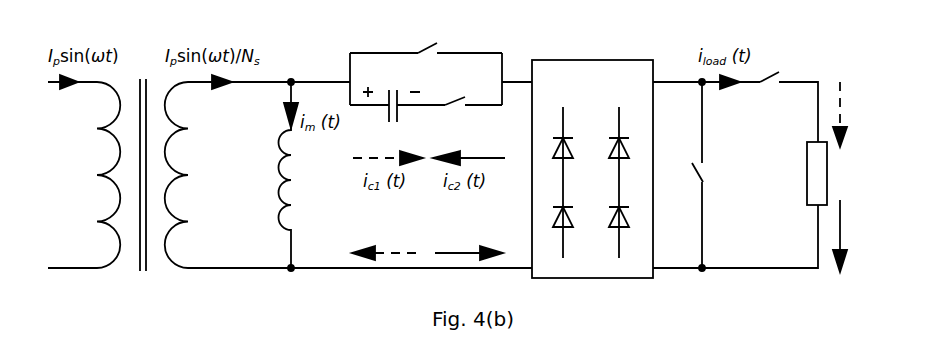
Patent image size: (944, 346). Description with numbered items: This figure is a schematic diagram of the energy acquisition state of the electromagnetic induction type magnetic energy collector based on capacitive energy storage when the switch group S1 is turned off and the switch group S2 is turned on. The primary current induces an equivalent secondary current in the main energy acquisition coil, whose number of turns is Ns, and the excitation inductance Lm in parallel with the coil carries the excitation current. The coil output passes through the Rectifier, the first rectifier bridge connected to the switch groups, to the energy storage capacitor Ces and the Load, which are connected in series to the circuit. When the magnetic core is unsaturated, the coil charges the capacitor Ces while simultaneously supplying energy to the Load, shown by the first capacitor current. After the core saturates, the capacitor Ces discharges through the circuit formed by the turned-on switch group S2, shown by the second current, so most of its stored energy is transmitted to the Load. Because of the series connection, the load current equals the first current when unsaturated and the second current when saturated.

The number of coil turns Ns is at (190, 175).
The excitation inductance Lm is at (300, 175).
The energy storage capacitor Ces is at (391, 116).
The switch group S1 is at (559, 155).
The switch group S2 is at (610, 104).
The first rectifier bridge Rectifier is at (592, 169).
The load Load is at (790, 173).